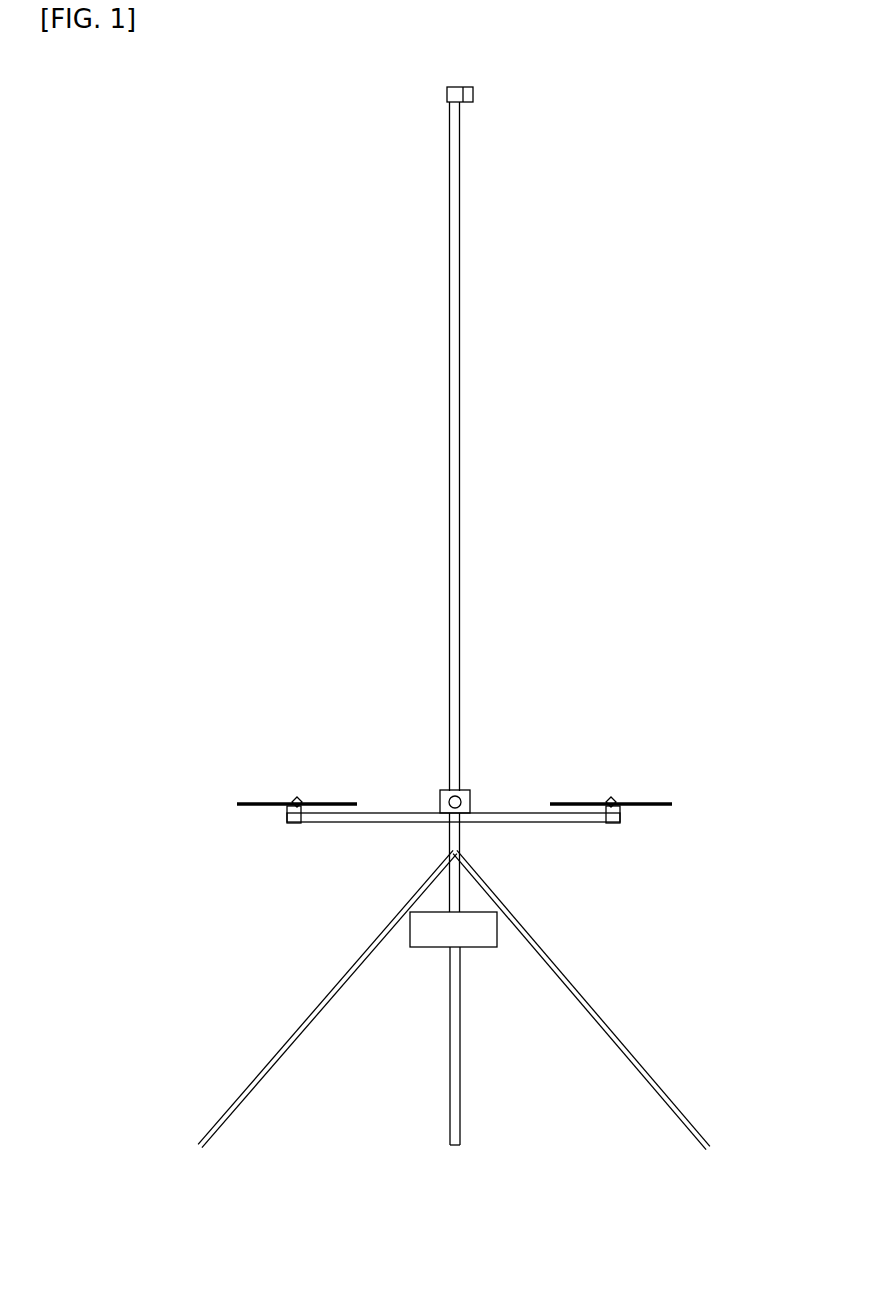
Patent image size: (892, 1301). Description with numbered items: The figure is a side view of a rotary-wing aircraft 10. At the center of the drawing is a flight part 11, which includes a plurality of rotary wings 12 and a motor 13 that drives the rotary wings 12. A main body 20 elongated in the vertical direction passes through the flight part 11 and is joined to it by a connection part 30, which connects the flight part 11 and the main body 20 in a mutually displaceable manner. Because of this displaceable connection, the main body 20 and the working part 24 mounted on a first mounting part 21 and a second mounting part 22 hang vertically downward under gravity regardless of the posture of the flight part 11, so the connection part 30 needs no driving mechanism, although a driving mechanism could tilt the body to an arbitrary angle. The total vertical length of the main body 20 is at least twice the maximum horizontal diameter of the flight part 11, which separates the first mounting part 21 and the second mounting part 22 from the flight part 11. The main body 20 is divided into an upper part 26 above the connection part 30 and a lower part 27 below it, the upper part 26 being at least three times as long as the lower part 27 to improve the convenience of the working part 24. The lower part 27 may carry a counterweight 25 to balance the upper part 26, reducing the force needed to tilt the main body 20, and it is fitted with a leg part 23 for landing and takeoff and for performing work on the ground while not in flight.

The rotary-wing aircraft 10 is at (246, 490).
The flight part 11 is at (220, 778).
The rotary wing 12 is at (277, 800).
The motor 13 is at (287, 819).
The main body 20 is at (484, 532).
The first mounting part 21 is at (460, 105).
The second mounting part 22 is at (465, 912).
The leg part 23 is at (457, 1103).
The working part 24 is at (470, 93).
The counterweight 25 is at (492, 940).
The upper part 26 is at (410, 88).
The lower part 27 is at (747, 803).
The connection part 30 is at (466, 790).